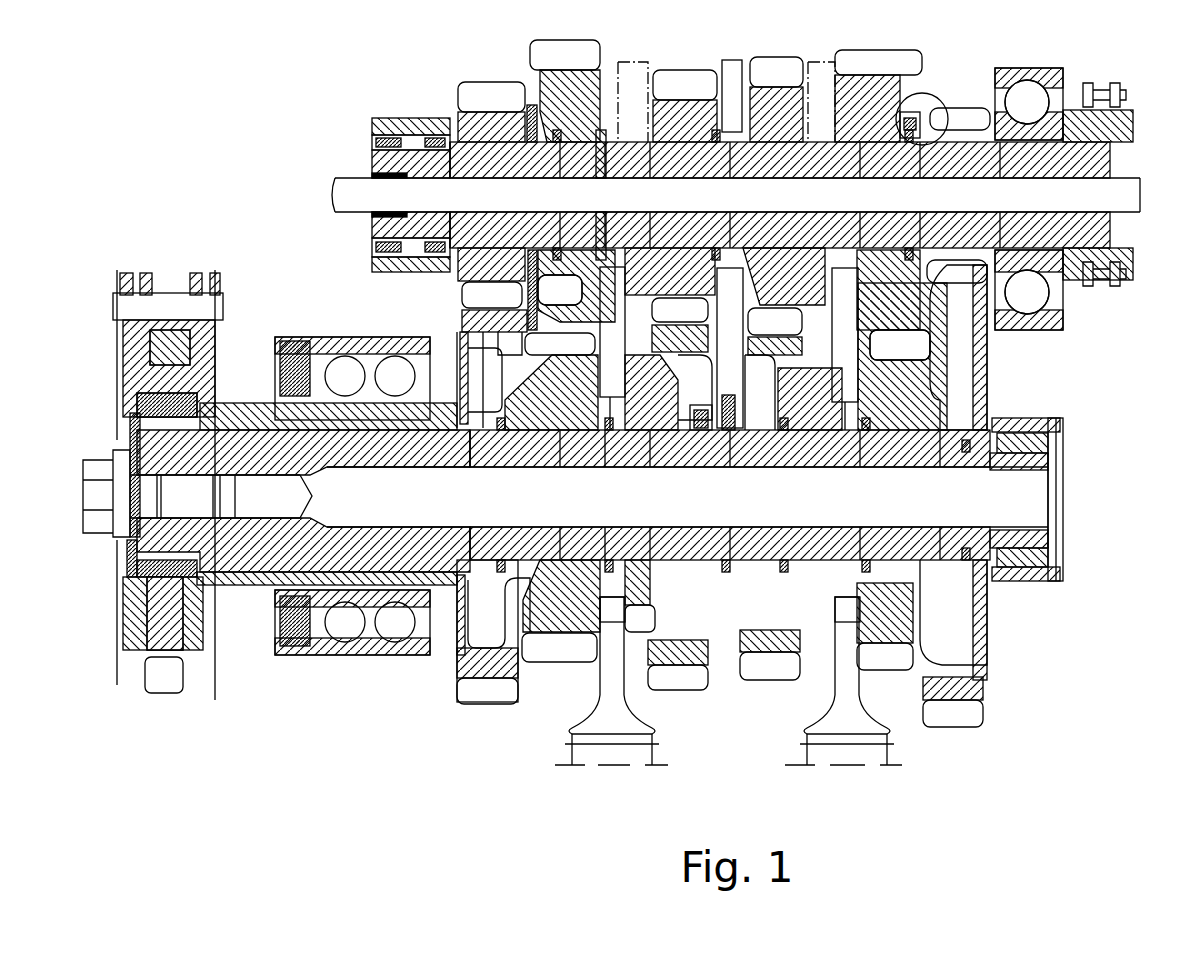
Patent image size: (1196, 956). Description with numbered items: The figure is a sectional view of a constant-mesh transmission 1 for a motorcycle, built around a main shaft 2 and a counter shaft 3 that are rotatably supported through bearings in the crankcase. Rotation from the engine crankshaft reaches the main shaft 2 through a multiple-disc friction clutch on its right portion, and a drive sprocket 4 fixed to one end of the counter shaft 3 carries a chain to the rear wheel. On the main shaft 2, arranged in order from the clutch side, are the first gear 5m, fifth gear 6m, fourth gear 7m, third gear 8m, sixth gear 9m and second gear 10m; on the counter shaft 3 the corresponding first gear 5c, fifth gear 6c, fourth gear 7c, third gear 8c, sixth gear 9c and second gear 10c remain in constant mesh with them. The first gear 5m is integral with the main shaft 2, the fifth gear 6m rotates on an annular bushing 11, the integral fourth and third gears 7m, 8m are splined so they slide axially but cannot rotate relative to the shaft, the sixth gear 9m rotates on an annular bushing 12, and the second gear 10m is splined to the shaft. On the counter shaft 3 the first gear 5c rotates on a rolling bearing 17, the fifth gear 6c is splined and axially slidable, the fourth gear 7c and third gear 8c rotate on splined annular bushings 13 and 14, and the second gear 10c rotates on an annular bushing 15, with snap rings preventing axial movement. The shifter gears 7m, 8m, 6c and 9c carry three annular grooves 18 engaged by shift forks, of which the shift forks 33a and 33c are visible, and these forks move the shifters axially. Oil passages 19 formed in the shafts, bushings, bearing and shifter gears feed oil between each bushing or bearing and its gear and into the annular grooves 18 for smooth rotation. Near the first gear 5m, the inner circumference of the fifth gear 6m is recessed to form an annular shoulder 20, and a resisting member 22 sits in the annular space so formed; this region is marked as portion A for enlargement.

The constant-mesh transmission 1 is at (265, 134).
The main shaft 2 is at (1136, 243).
The counter shaft 3 is at (1062, 458).
The drive sprocket 4 is at (176, 682).
The first gear 5m is at (965, 112).
The fifth gear 6m is at (894, 62).
The fourth gear 7m is at (781, 64).
The third gear 8m is at (680, 80).
The sixth gear 9m is at (586, 56).
The second gear 10m is at (489, 98).
The first gear 5c is at (970, 727).
The fifth gear 6c is at (890, 672).
The fourth gear 7c is at (760, 682).
The third gear 8c is at (688, 692).
The sixth gear 9c is at (560, 664).
The second gear 10c is at (478, 704).
The annular bushing 11 is at (866, 146).
The annular bushing 12 is at (599, 150).
The annular bushing 13 is at (752, 433).
The annular bushing 14 is at (700, 433).
The annular bushing 15 is at (470, 442).
The rolling bearing 17 is at (1000, 412).
The annular grooves 18 is at (730, 110).
The oil passages 19 is at (557, 142).
The annular shoulder 20 is at (917, 116).
The resisting member 22 is at (926, 140).
The shift fork 33a is at (850, 736).
The shift fork 33c is at (630, 736).
The portion A is at (937, 105).